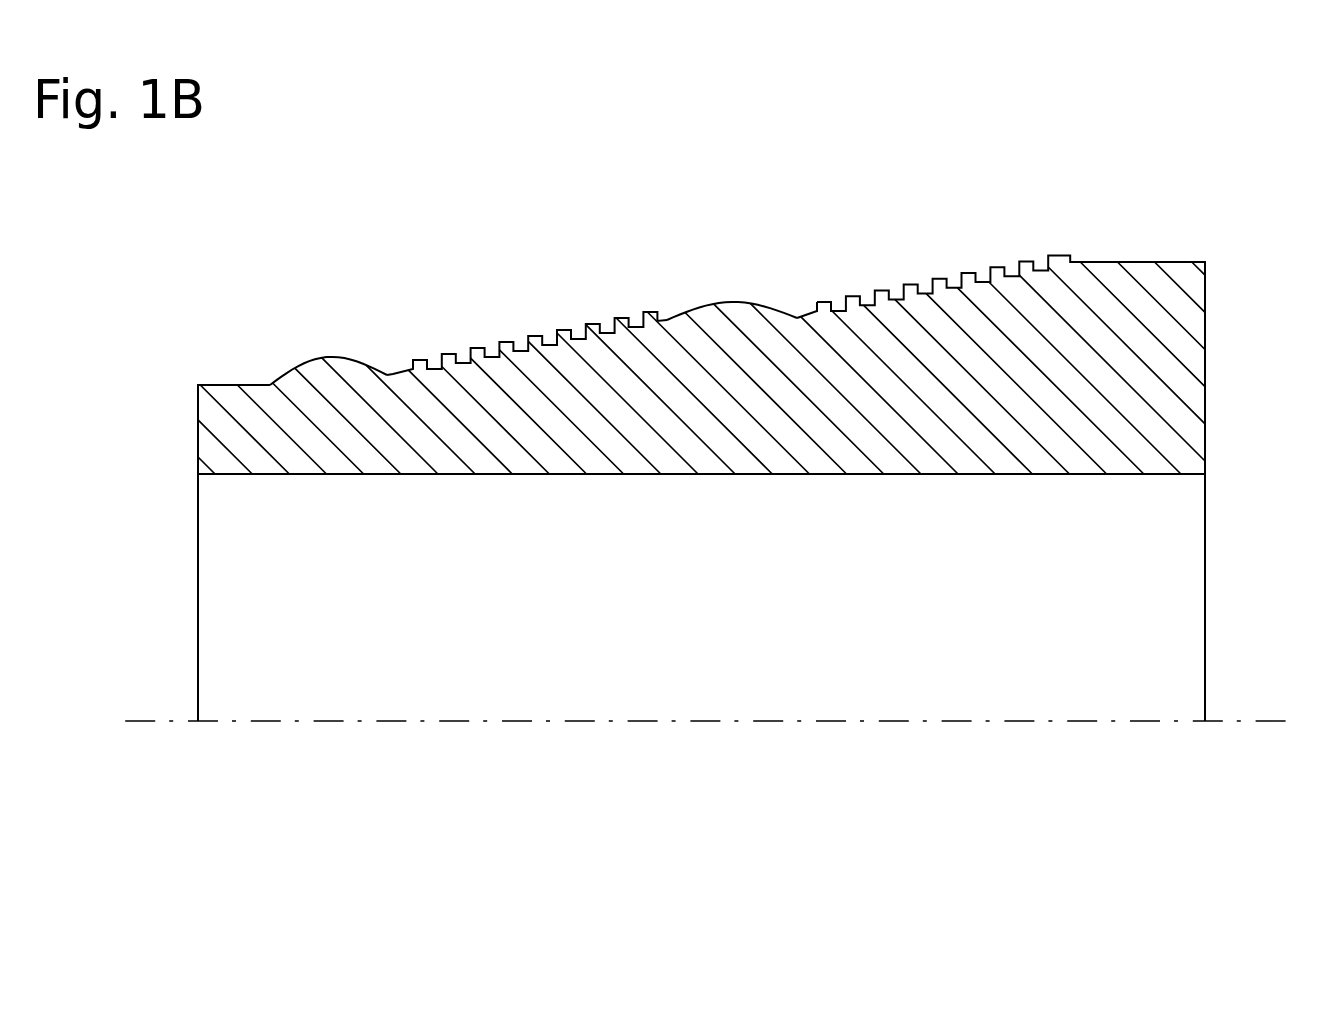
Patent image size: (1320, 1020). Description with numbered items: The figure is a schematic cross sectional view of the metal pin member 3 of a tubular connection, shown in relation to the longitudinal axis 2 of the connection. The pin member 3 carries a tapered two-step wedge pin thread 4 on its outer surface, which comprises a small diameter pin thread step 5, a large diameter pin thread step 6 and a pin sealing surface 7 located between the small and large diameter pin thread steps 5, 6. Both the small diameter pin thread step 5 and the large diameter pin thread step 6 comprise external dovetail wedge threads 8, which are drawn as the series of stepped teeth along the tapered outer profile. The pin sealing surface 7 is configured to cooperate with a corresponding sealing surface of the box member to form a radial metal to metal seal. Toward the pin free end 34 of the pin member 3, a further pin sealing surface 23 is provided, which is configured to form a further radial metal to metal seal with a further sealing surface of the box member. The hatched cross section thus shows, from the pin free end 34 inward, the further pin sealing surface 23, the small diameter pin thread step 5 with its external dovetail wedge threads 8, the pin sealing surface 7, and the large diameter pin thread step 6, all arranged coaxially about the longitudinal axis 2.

The longitudinal axis 2 is at (1253, 721).
The metal pin member 3 is at (1178, 488).
The tapered two-step wedge pin thread 4 is at (702, 285).
The small diameter pin thread step 5 is at (555, 297).
The large diameter pin thread step 6 is at (980, 252).
The pin sealing surface 7 is at (749, 280).
The external dovetail wedge threads 8 is at (490, 330).
The further pin sealing surface 23 is at (320, 351).
The pin free end 34 is at (196, 457).